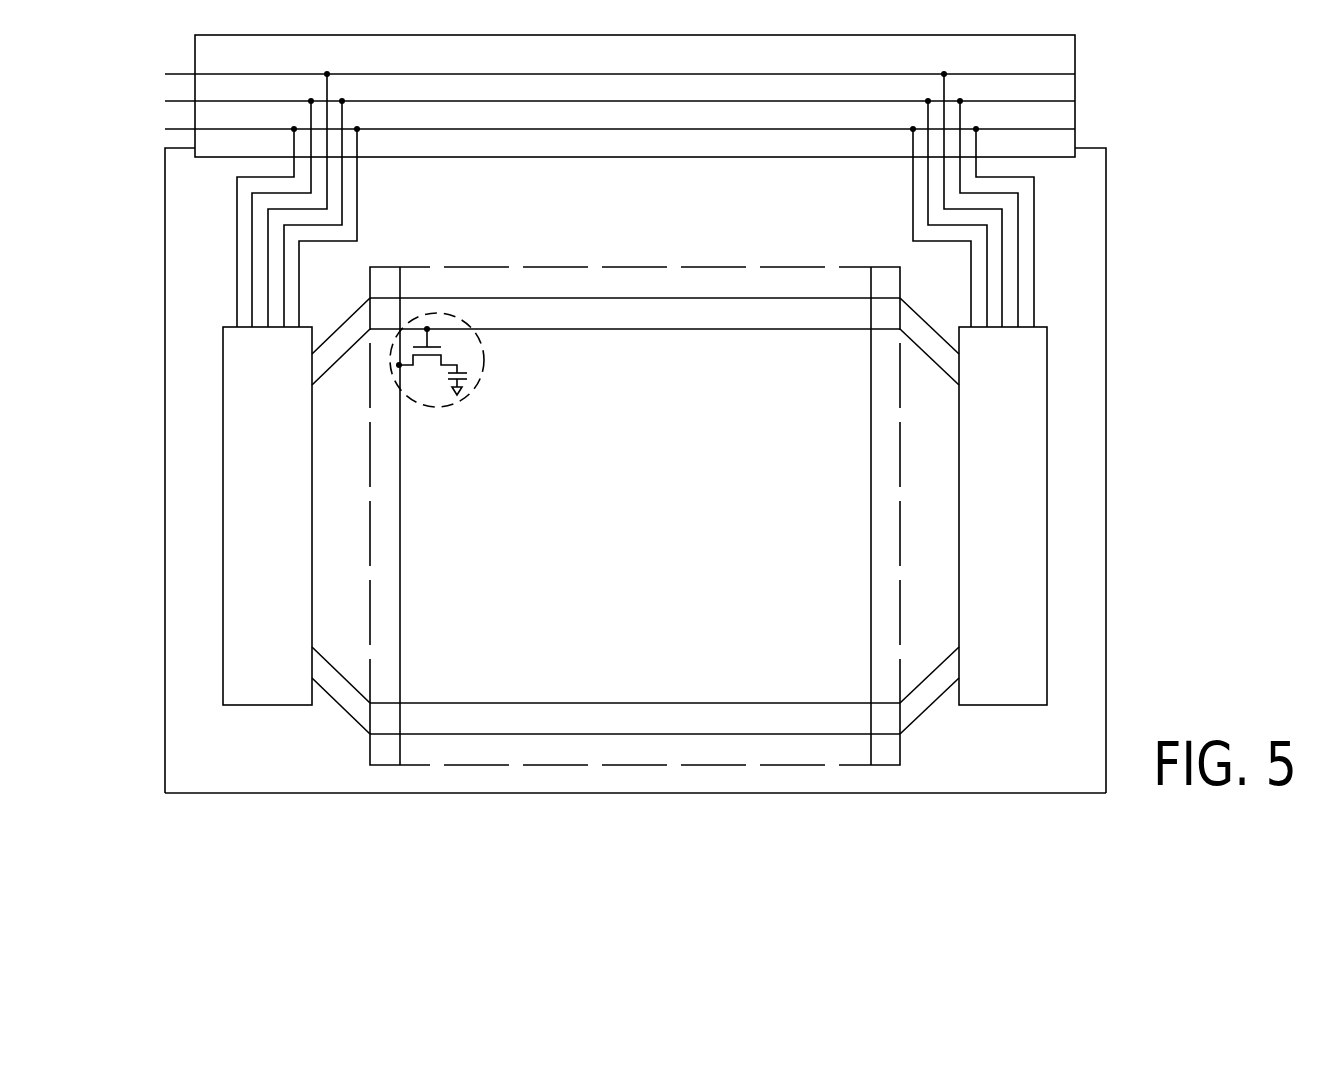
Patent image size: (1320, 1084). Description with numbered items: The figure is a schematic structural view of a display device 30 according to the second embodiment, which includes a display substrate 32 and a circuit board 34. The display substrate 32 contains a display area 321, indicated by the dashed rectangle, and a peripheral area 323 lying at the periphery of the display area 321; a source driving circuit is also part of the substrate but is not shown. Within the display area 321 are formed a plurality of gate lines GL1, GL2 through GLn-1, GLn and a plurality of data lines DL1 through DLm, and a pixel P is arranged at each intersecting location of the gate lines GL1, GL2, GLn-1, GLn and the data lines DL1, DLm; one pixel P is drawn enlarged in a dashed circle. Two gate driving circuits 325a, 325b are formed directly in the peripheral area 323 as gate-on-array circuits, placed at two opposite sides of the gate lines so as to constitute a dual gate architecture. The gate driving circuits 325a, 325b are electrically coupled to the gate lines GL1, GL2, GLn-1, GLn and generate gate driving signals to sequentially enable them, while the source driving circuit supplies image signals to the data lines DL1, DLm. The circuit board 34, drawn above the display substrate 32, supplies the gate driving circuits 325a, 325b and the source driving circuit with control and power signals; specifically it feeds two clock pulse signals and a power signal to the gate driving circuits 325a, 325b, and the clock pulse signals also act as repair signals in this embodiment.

The display device 30 is at (1227, 175).
The display substrate 32 is at (1106, 333).
The circuit board 34 is at (1076, 63).
The display area 321 is at (488, 753).
The peripheral area 323 is at (939, 780).
The gate driving circuit 325a is at (223, 496).
The gate driving circuit 325b is at (959, 498).
The gate line GL1 is at (655, 298).
The gate line GL2 is at (767, 329).
The gate line GLn-1 is at (766, 703).
The gate line GLn is at (655, 734).
The data line DL1 is at (400, 541).
The data line DLm is at (871, 541).
The pixel P is at (457, 400).